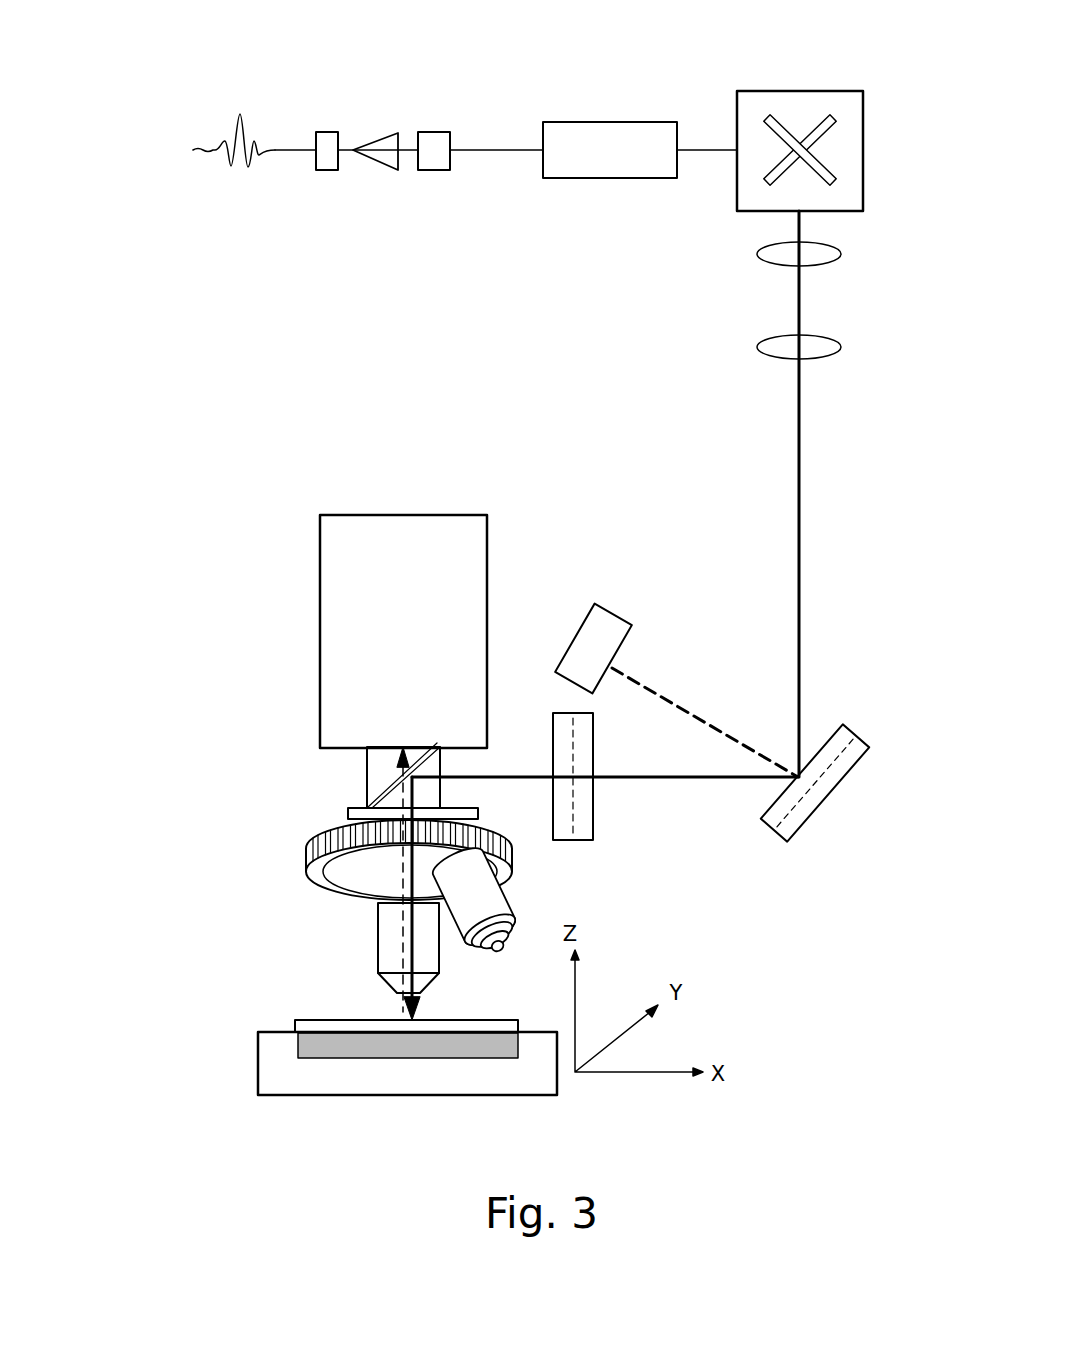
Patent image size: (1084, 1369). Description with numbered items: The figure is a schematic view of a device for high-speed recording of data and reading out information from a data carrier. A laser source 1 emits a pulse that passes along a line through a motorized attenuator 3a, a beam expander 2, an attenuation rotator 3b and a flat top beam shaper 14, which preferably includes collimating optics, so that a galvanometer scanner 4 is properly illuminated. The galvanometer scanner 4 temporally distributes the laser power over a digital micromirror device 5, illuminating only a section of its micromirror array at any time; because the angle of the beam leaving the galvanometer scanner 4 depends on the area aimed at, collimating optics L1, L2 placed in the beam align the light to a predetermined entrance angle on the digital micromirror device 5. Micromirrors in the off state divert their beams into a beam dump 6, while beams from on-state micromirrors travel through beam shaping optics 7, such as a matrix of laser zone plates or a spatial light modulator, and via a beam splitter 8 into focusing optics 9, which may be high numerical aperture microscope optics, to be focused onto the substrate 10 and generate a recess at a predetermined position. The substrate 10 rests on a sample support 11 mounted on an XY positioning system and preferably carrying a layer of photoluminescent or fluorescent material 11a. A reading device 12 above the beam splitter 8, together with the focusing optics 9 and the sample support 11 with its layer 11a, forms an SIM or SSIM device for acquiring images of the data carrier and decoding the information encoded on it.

The laser source 1 is at (240, 118).
The beam expander 2 is at (395, 133).
The motorized attenuator 3a is at (327, 132).
The attenuation rotator 3b is at (436, 132).
The galvanometer scanner 4 is at (805, 91).
The digital micromirror device 5 is at (853, 722).
The beam dump 6 is at (615, 607).
The beam shaping optics 7 is at (593, 805).
The beam splitter 8 is at (397, 767).
The focusing optics 9 is at (378, 938).
The substrate 10 is at (293, 1030).
The sample support 11 is at (420, 1096).
The layer of photoluminescent or fluorescent material 11a is at (300, 1046).
The reading device 12 is at (328, 683).
The flat top beam shaper 14 is at (610, 122).
The collimating optics L1 is at (816, 254).
The collimating optics L2 is at (816, 347).